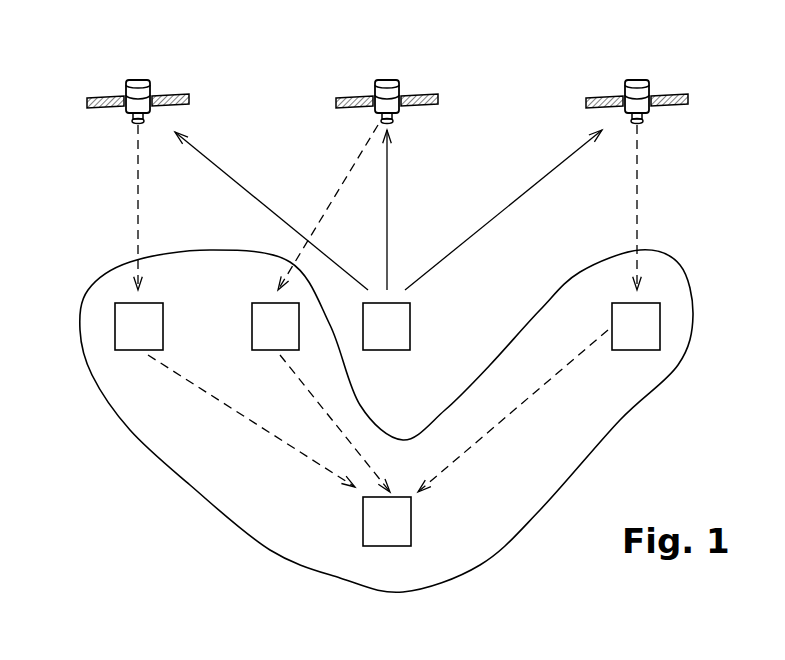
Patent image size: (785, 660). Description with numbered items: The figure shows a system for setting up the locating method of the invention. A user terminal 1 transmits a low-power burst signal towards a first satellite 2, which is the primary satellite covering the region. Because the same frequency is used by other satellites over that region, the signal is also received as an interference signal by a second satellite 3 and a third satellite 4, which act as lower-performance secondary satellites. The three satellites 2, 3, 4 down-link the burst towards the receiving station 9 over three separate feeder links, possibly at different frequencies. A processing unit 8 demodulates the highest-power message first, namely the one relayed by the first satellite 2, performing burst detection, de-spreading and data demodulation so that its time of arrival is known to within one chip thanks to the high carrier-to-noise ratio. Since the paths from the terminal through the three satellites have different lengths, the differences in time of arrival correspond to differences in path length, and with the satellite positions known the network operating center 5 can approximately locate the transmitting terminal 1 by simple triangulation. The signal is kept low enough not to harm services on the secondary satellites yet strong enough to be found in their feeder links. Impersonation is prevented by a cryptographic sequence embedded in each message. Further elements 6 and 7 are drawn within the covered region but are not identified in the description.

The user terminal 1 is at (393, 328).
The first satellite 2 is at (387, 82).
The second satellite 3 is at (143, 84).
The third satellite 4 is at (635, 82).
The network operating center 5 is at (125, 331).
The receiver terminal 6 is at (263, 316).
The receiver terminal 7 is at (640, 327).
The processing unit 8 is at (382, 530).
The receiving station 9 is at (190, 485).